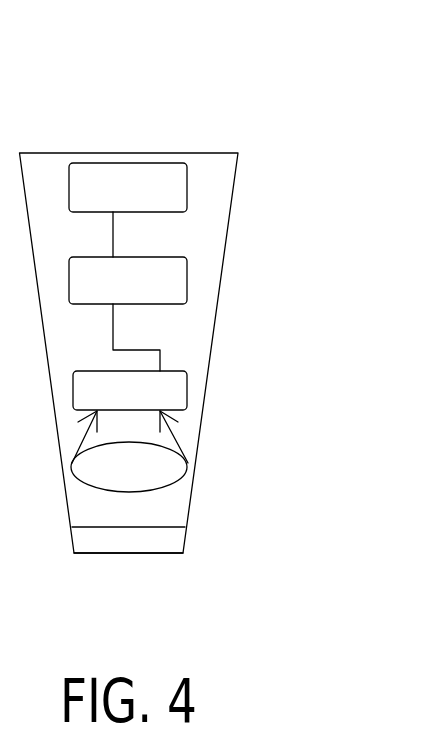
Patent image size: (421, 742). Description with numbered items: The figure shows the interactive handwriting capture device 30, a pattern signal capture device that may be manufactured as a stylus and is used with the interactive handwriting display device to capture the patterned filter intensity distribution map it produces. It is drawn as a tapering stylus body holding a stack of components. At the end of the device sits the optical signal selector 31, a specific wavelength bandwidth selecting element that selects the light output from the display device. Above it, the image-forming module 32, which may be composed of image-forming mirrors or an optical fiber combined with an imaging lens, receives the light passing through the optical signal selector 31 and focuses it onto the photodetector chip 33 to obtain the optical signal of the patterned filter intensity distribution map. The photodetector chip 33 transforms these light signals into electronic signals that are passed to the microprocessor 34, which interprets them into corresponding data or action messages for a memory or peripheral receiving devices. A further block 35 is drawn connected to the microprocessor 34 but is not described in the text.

The interactive handwriting capture device 30 is at (246, 116).
The optical signal selector 31 is at (187, 547).
The image-forming module 32 is at (180, 480).
The photodetector chip 33 is at (187, 392).
The microprocessor 34 is at (187, 281).
The communication unit 35 is at (187, 188).